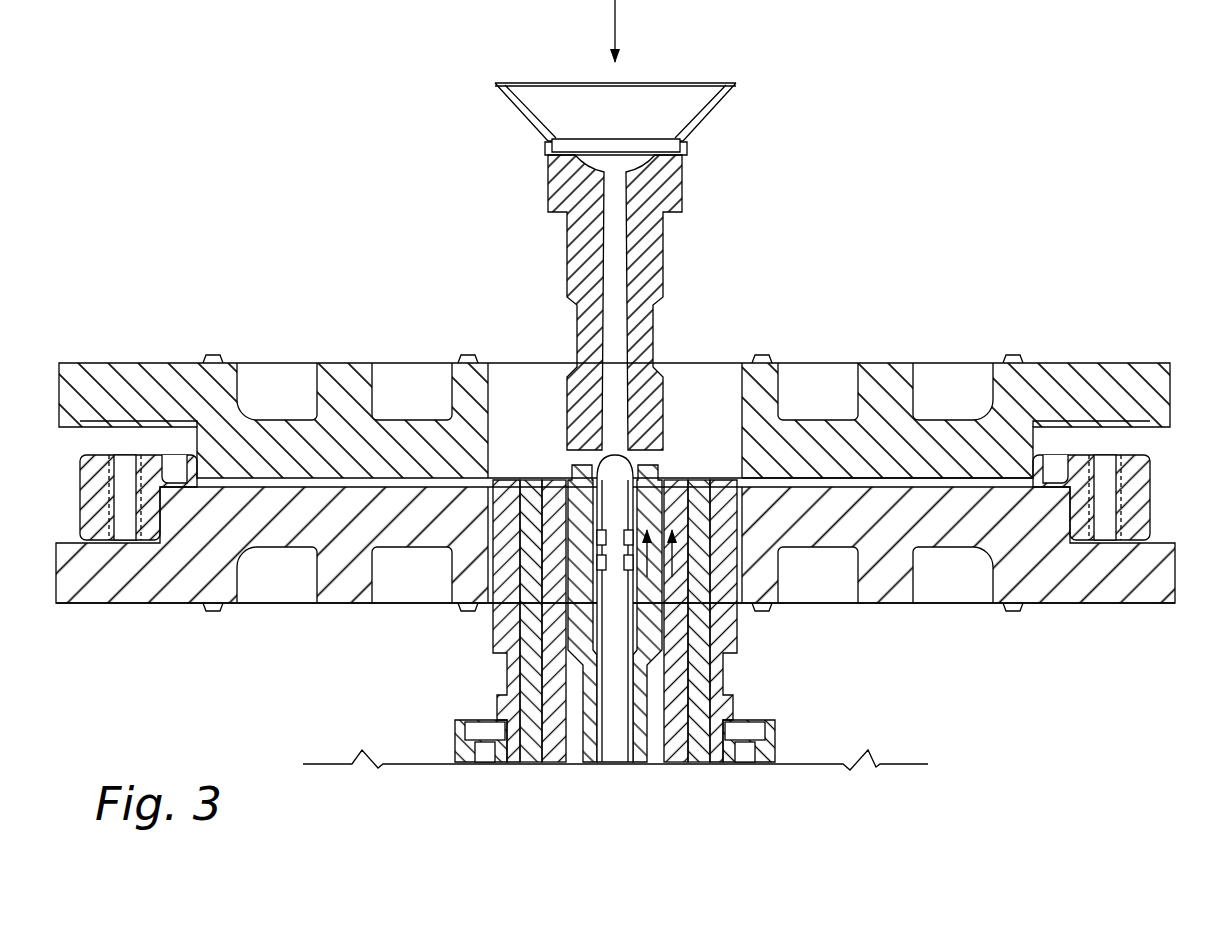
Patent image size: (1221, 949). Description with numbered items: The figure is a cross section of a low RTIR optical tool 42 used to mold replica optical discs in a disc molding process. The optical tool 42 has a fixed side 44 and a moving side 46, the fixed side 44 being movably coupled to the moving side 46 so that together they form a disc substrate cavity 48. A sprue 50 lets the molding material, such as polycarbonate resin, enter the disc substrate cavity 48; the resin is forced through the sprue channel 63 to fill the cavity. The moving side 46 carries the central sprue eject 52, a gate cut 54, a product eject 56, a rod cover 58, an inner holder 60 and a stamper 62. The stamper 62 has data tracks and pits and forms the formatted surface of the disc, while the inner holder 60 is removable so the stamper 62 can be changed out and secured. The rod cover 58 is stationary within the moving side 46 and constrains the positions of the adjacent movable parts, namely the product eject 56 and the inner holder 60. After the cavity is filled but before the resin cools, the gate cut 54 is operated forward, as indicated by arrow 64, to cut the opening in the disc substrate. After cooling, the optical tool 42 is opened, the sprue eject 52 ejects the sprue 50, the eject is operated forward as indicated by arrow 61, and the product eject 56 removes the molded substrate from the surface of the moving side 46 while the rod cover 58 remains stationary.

The optical tool 42 is at (375, 172).
The fixed side 44 is at (963, 316).
The moving side 46 is at (990, 685).
The disc substrate cavity 48 is at (897, 480).
The sprue 50 is at (665, 245).
The sprue eject 52 is at (614, 762).
The gate cut 54 is at (572, 762).
The product eject 56 is at (548, 762).
The rod cover 58 is at (514, 762).
The inner holder 60 is at (493, 698).
The arrow 61 is at (672, 527).
The stamper 62 is at (356, 586).
The sprue channel 63 is at (617, 22).
The arrow 64 is at (647, 527).